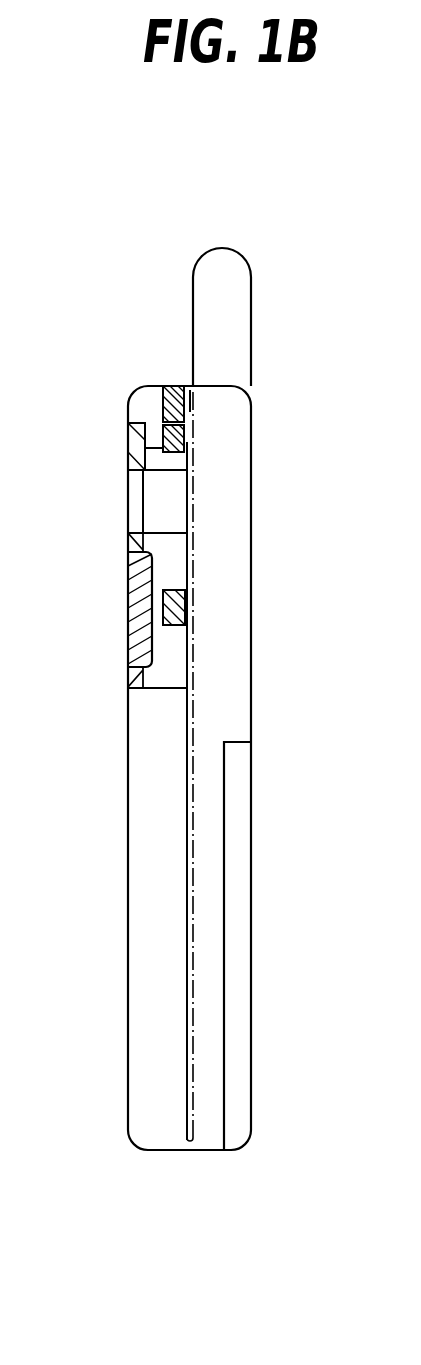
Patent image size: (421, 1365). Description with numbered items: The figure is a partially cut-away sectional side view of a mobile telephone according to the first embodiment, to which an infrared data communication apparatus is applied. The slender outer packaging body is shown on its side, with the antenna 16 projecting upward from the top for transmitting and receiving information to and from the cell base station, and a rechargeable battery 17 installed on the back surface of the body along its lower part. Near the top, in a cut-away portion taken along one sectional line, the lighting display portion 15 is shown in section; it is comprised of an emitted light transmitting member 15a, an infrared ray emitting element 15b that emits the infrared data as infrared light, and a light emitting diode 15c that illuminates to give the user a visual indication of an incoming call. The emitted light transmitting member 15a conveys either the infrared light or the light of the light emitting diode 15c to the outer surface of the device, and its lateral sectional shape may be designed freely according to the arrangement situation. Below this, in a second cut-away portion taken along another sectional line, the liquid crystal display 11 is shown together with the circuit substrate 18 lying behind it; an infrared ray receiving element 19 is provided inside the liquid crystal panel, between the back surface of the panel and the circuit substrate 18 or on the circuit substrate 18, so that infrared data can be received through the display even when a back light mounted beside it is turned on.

The liquid crystal display 11 is at (133, 592).
The lighting display portion 15 is at (124, 400).
The emitted light transmitting member 15a is at (153, 392).
The infrared ray emitting element 15b is at (187, 400).
The light emitting diode 15c is at (188, 438).
The antenna 16 is at (243, 281).
The rechargeable battery 17 is at (247, 988).
The circuit substrate 18 is at (193, 557).
The infrared ray receiving element 19 is at (186, 598).